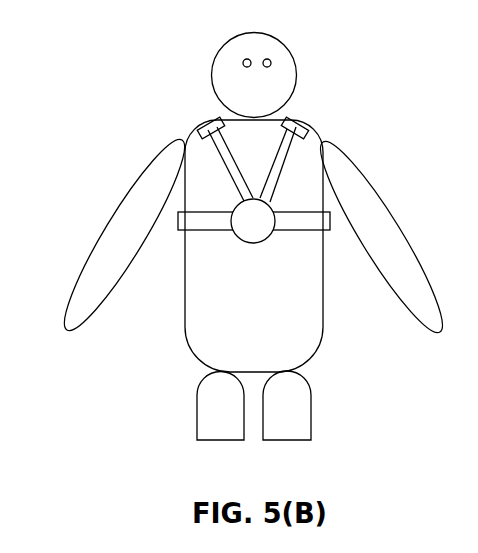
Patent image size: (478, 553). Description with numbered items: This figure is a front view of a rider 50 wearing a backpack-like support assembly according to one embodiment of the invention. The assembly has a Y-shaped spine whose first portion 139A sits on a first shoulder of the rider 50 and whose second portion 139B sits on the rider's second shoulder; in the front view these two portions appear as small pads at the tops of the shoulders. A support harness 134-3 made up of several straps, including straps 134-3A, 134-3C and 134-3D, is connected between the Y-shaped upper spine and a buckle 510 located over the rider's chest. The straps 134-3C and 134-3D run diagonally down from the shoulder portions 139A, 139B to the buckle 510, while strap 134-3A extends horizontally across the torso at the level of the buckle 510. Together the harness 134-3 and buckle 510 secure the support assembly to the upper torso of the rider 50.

The rider 50 is at (210, 39).
The support harness 134-3 is at (212, 186).
The strap 134-3A is at (313, 218).
The strap 134-3C is at (282, 165).
The strap 134-3D is at (227, 166).
The first portion 139A is at (302, 124).
The second portion 139B is at (208, 123).
The buckle 510 is at (258, 227).